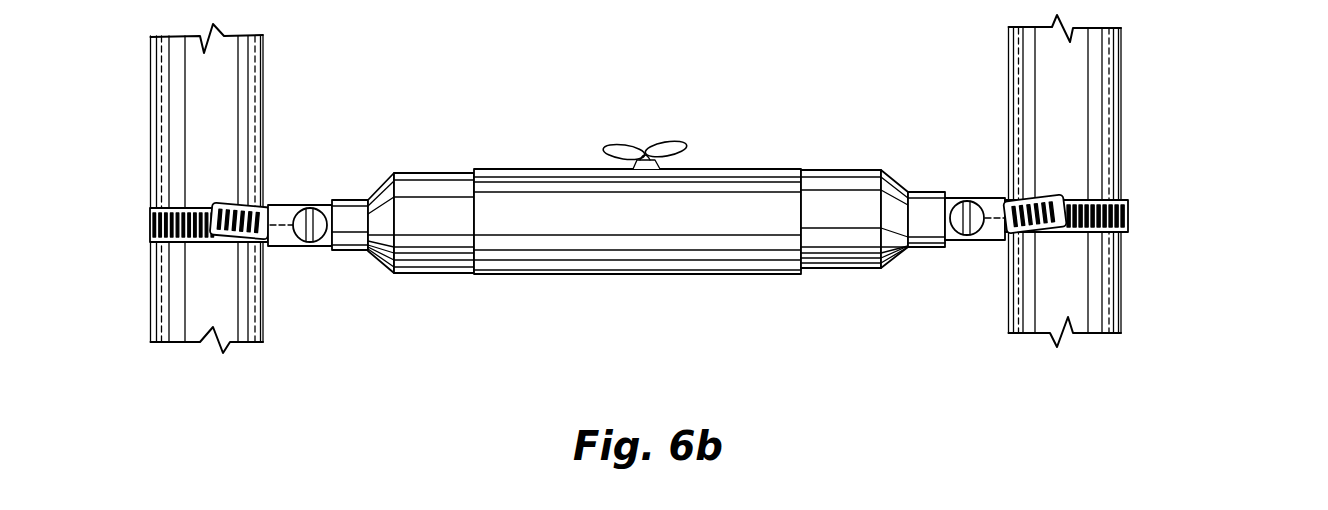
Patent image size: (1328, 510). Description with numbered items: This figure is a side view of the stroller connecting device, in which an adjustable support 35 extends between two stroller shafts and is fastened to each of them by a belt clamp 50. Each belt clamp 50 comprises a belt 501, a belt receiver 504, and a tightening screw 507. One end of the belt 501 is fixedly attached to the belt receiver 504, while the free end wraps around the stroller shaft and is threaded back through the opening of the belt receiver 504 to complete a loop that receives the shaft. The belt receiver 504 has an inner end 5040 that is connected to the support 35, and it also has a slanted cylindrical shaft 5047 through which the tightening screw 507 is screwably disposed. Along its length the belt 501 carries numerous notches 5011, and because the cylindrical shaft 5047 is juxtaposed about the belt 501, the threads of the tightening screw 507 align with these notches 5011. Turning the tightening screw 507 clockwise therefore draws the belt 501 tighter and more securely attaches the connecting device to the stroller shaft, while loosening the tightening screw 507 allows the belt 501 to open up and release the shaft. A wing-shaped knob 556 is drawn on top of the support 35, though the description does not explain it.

The support 35 is at (798, 332).
The wing nut 556 is at (664, 150).
The tightening screw 507 is at (963, 207).
The belt clamp 50 is at (1132, 203).
The notches 5011 is at (1185, 183).
The belt 501 is at (1153, 220).
The slanted cylindrical shaft 5047 is at (987, 228).
The inner end 5040 is at (897, 263).
The belt receiver 504 is at (1006, 248).